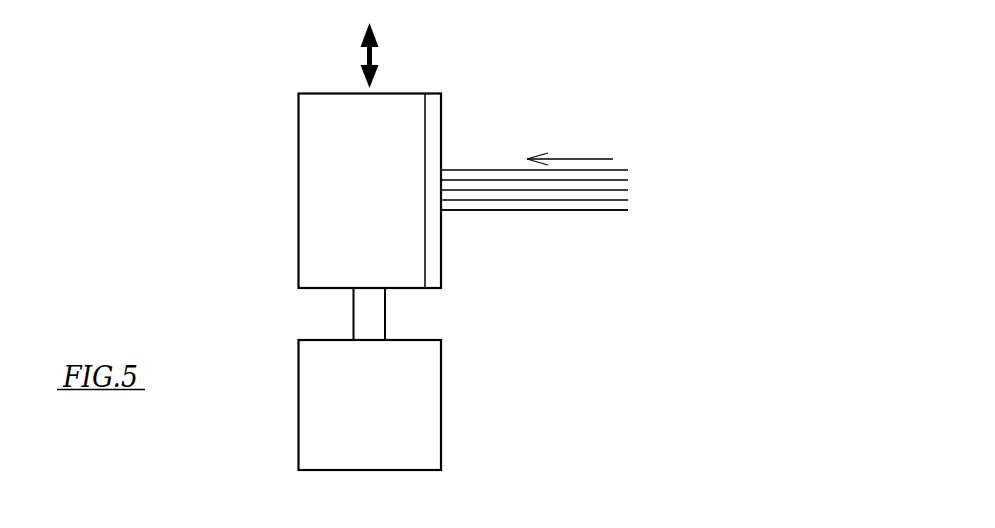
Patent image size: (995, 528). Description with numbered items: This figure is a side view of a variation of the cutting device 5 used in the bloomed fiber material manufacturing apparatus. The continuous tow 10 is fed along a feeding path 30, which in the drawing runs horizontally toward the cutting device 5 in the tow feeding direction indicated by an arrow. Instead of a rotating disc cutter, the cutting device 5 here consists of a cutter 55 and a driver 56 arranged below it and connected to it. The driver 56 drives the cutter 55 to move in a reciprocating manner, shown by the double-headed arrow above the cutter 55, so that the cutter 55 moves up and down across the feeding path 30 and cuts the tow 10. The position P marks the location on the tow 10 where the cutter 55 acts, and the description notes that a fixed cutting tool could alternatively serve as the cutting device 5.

The cutting device 5 is at (238, 170).
The cutter 55 is at (299, 212).
The driver 56 is at (299, 372).
The tow 10 is at (575, 211).
The feeding path 30 is at (577, 159).
The pressing position P is at (460, 213).